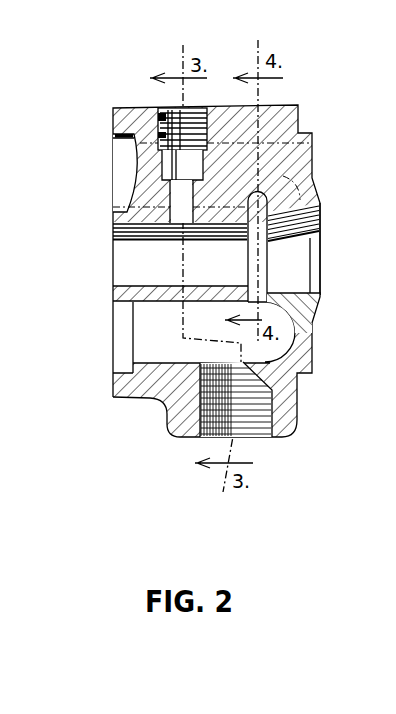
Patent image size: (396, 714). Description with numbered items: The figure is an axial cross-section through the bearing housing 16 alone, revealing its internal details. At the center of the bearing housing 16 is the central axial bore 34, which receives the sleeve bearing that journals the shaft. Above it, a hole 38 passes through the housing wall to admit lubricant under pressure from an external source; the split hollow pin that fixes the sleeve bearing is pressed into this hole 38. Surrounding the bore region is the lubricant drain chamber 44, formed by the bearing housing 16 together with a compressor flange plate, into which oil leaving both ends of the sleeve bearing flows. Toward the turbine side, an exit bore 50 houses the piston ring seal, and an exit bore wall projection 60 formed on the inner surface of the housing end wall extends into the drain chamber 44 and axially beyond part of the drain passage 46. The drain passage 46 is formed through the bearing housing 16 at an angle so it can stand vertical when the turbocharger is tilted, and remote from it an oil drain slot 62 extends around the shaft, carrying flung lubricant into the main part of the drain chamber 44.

The bearing housing 16 is at (202, 263).
The hole 38 is at (172, 110).
The central axial bore 34 is at (131, 286).
The lubricant drain chamber 44 is at (146, 329).
The oil drain slot 62 is at (322, 221).
The exit bore 50 is at (290, 296).
The exit bore wall projection 60 is at (319, 308).
The drain passage 46 is at (258, 428).